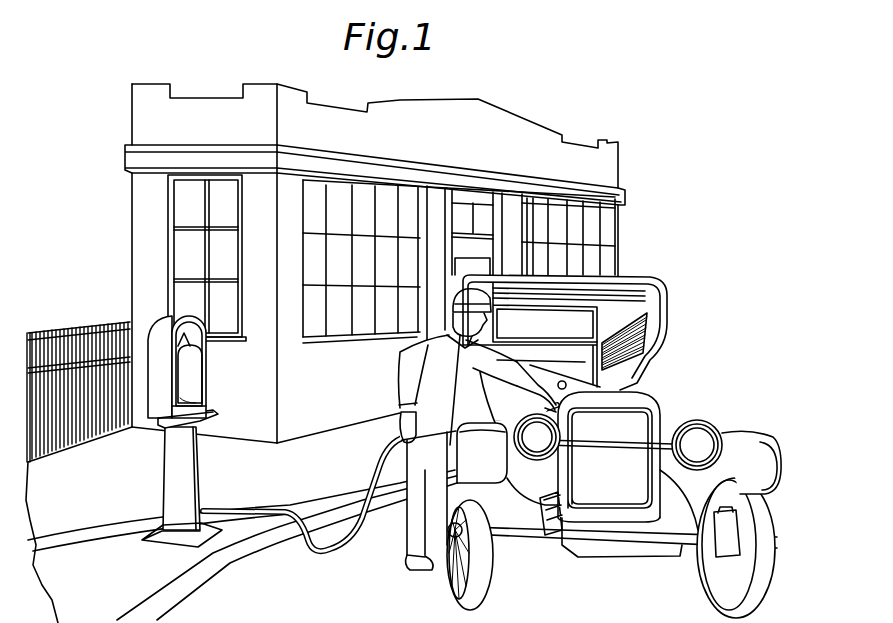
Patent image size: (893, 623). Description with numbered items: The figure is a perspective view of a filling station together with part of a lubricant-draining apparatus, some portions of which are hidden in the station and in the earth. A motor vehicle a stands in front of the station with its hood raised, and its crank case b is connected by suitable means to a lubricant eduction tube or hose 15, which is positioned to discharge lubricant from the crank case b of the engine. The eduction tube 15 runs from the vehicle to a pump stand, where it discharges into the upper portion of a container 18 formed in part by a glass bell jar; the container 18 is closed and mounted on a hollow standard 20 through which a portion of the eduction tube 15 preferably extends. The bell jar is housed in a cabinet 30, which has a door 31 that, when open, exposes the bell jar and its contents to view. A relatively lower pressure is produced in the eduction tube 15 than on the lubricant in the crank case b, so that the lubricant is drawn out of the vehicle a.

The lubricant eduction tube 15 is at (313, 556).
The container 18 is at (193, 374).
The hollow standard 20 is at (173, 471).
The cabinet 30 is at (200, 346).
The door 31 is at (162, 372).
The motor vehicle a is at (664, 396).
The crank case b is at (547, 485).